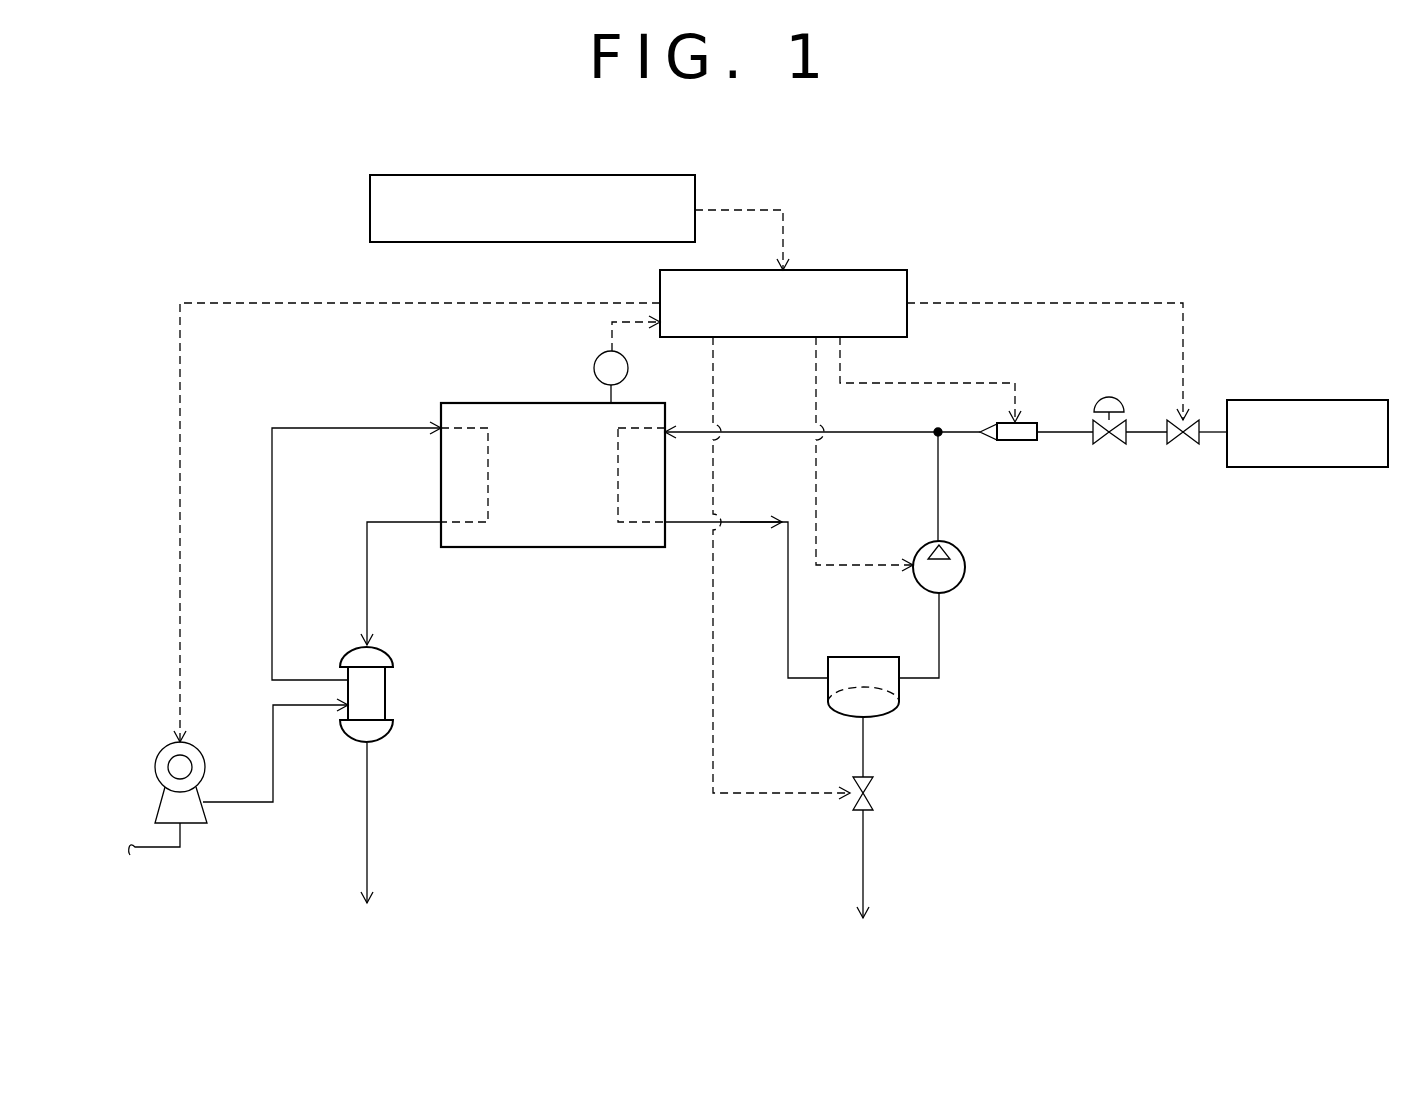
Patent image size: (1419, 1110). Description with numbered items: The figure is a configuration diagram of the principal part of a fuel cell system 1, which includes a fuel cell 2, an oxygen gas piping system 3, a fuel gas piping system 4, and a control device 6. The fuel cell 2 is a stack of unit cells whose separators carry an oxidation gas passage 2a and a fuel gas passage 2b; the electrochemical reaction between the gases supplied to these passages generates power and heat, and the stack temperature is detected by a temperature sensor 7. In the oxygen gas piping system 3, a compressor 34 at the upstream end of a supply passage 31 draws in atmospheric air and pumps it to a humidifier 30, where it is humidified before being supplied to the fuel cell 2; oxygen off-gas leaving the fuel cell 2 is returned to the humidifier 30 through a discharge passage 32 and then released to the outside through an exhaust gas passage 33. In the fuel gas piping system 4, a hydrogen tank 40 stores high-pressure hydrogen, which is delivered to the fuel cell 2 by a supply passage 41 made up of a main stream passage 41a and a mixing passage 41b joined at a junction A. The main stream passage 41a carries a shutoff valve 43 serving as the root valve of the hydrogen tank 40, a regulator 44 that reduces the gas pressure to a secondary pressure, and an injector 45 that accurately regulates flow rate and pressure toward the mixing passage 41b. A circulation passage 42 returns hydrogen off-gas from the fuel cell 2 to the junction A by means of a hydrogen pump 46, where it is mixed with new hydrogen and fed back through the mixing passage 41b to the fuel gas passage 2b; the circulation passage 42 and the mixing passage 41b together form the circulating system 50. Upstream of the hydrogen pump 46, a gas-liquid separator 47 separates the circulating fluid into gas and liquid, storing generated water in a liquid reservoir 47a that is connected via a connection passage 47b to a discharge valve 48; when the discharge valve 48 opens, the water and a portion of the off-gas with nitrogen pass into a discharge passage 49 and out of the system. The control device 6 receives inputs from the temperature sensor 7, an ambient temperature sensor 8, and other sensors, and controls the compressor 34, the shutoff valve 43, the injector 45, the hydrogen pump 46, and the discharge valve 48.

The fuel cell system 1 is at (253, 237).
The fuel cell 2 is at (553, 513).
The oxidation gas passage 2a is at (488, 450).
The fuel gas passage 2b is at (618, 516).
The oxygen gas piping system 3 is at (278, 407).
The fuel gas piping system 4 is at (1148, 538).
The control device 6 is at (868, 270).
The temperature sensor 7 is at (628, 368).
The ambient temperature sensor 8 is at (697, 201).
The humidifier 30 is at (385, 690).
The supply passage 31 is at (347, 428).
The discharge passage 32 is at (387, 522).
The exhaust gas passage 33 is at (367, 808).
The compressor 34 is at (160, 748).
The hydrogen tank 40 is at (1352, 400).
The supply passage 41 is at (951, 436).
The main stream passage 41a is at (1063, 435).
The mixing passage 41b is at (882, 433).
The circulation passage 42 is at (788, 633).
The shutoff valve 43 is at (1183, 446).
The regulator 44 is at (1112, 397).
The injector 45 is at (1015, 440).
The hydrogen pump 46 is at (965, 567).
The gas-liquid separator 47 is at (889, 711).
The liquid reservoir 47a is at (843, 722).
The connection passage 47b is at (866, 750).
The discharge valve 48 is at (873, 790).
The discharge passage 49 is at (865, 855).
The circulating system 50 is at (955, 642).
The junction A is at (938, 432).